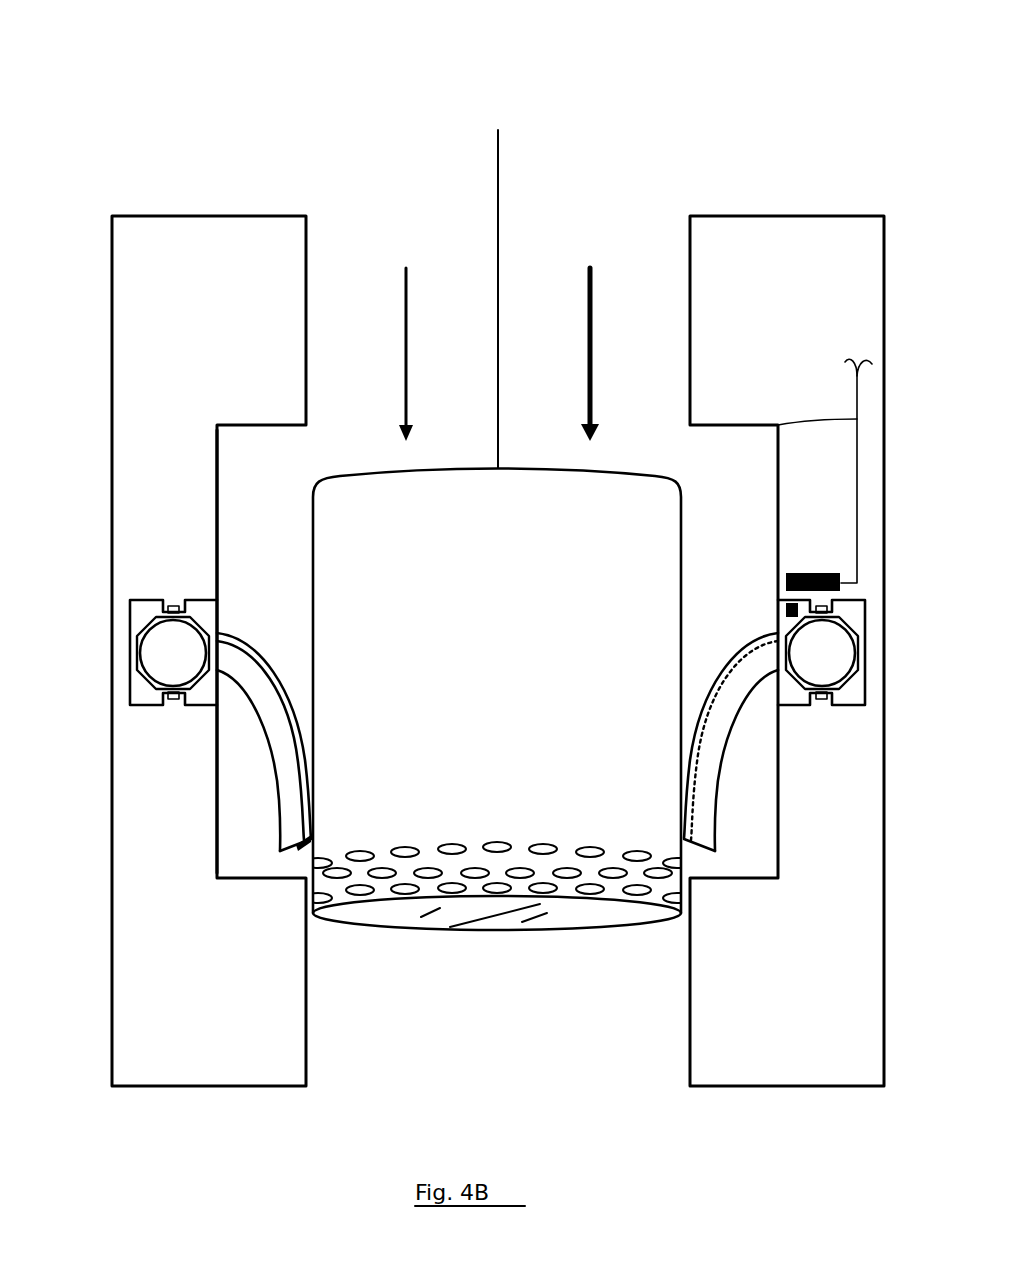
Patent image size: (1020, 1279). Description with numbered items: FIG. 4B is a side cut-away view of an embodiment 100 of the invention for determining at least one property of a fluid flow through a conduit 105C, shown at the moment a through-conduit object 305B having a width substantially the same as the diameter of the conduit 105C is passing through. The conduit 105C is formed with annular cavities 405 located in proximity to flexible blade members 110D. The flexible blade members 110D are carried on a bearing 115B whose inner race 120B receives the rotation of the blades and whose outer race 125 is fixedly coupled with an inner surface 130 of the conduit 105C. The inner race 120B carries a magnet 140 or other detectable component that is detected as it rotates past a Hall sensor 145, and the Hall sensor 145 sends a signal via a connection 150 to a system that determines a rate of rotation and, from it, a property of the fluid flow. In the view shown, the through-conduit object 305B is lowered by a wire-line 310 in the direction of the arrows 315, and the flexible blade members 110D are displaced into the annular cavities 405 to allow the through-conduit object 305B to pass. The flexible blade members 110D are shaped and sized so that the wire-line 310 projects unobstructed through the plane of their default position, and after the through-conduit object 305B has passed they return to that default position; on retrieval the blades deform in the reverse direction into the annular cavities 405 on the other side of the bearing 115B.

The embodiment 100 is at (454, 543).
The conduit 105C is at (148, 216).
The flexible blade members 110D is at (167, 713).
The bearing 115B is at (767, 607).
The inner race 120B is at (218, 637).
The outer race 125 is at (152, 597).
The inner surface 130 is at (690, 283).
The magnet 140 is at (787, 606).
The Hall sensor 145 is at (797, 573).
The connection 150 is at (785, 424).
The through-conduit object 305B is at (483, 930).
The wire-line 310 is at (498, 140).
The arrows 315 is at (602, 329).
The annular cavities 405 is at (228, 564).